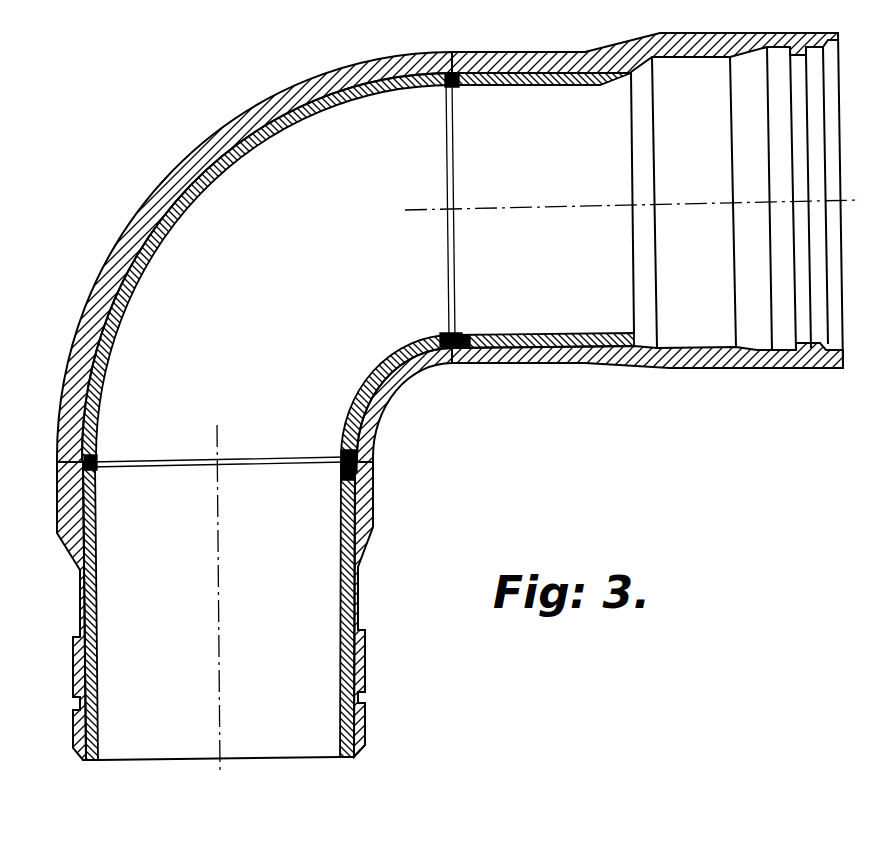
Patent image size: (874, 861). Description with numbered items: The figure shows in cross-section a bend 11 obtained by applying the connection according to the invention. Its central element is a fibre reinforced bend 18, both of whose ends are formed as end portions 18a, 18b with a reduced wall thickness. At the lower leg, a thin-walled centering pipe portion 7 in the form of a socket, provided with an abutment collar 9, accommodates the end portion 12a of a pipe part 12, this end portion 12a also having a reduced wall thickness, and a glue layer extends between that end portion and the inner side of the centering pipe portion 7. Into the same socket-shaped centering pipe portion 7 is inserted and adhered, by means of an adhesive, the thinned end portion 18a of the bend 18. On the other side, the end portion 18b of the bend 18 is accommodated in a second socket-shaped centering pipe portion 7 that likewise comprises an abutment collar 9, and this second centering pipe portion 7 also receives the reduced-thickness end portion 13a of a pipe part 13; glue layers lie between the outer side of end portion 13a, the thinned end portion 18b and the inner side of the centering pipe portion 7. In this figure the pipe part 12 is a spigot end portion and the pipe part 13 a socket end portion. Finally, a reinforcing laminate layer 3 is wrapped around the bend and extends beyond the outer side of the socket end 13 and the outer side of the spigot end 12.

The reinforcing laminate layer 3 is at (306, 96).
The centering pipe portion 7 is at (454, 368).
The abutment collar 9 is at (452, 88).
The bend 11 is at (441, 396).
The pipe part 12 is at (83, 657).
The end portion 12a is at (339, 476).
The pipe part 13 is at (718, 357).
The end portion 13a is at (468, 332).
The fibre reinforced bend 18 is at (201, 179).
The end portion 18a is at (343, 455).
The end portion 18b is at (447, 330).